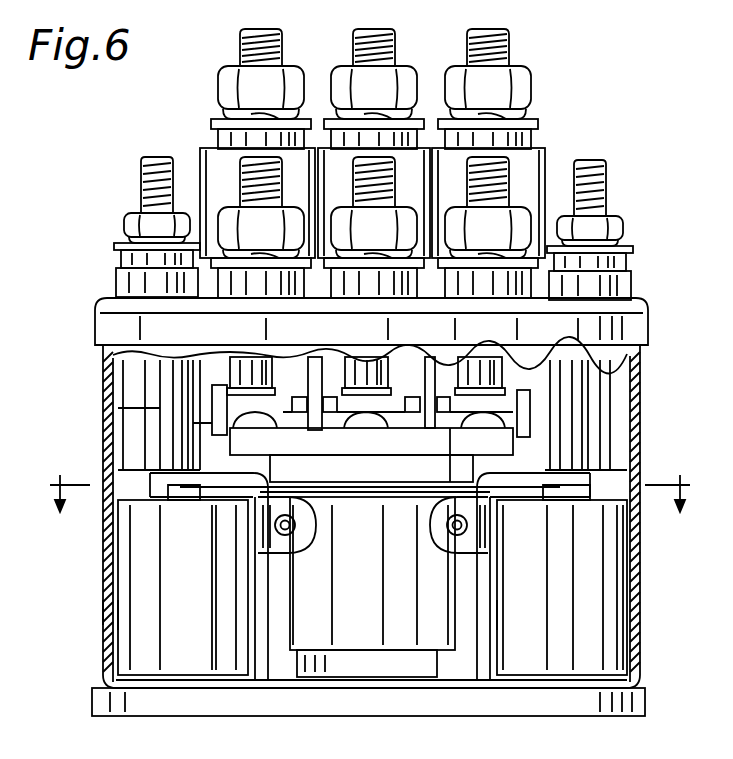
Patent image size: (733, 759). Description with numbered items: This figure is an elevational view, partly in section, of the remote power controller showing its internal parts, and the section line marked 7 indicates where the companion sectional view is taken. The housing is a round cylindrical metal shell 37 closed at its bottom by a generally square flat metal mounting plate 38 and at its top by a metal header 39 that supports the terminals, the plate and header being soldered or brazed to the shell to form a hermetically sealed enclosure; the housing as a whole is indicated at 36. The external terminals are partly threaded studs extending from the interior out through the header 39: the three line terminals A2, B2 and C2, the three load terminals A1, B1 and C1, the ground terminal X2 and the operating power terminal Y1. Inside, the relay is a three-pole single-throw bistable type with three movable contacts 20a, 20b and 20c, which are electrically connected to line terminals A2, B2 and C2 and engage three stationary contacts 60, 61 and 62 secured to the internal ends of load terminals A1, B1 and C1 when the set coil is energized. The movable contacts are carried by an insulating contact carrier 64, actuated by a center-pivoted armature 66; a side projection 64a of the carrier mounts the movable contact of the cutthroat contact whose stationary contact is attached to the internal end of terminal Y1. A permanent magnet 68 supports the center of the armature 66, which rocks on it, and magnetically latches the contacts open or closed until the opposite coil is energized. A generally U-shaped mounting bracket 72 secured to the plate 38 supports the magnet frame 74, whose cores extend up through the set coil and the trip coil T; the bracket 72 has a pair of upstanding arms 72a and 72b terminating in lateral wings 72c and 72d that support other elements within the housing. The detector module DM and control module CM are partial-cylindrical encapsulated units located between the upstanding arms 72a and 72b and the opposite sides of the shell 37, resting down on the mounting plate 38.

The line terminal C2 is at (279, 44).
The line terminal B2 is at (393, 44).
The line terminal A2 is at (507, 44).
The load terminal C1 is at (245, 180).
The load terminal B1 is at (392, 172).
The load terminal A1 is at (502, 178).
The operating power terminal Y1 is at (146, 178).
The ground terminal X2 is at (606, 178).
The header 39 is at (648, 322).
The housing 36 is at (84, 356).
The cylindrical metal shell 37 is at (103, 612).
The mounting plate 38 is at (90, 704).
The stationary contact 62 is at (258, 365).
The stationary contact 61 is at (369, 365).
The stationary contact 60 is at (491, 365).
The movable contact 20c is at (270, 418).
The movable contact 20b is at (385, 418).
The movable contact 20a is at (500, 415).
The insulating contact carrier 64 is at (522, 450).
The side projection 64a is at (120, 408).
The armature 66 is at (348, 447).
The permanent magnet 68 is at (385, 492).
The detector module DM is at (120, 550).
The control module CM is at (605, 582).
The trip coil T is at (357, 633).
The magnet frame 74 is at (393, 665).
The mounting bracket 72 is at (482, 652).
The upstanding arm 72a is at (260, 615).
The upstanding arm 72b is at (482, 620).
The lateral wing 72c is at (208, 478).
The lateral wing 72d is at (530, 478).
The section line 7- 7 is at (370, 482).